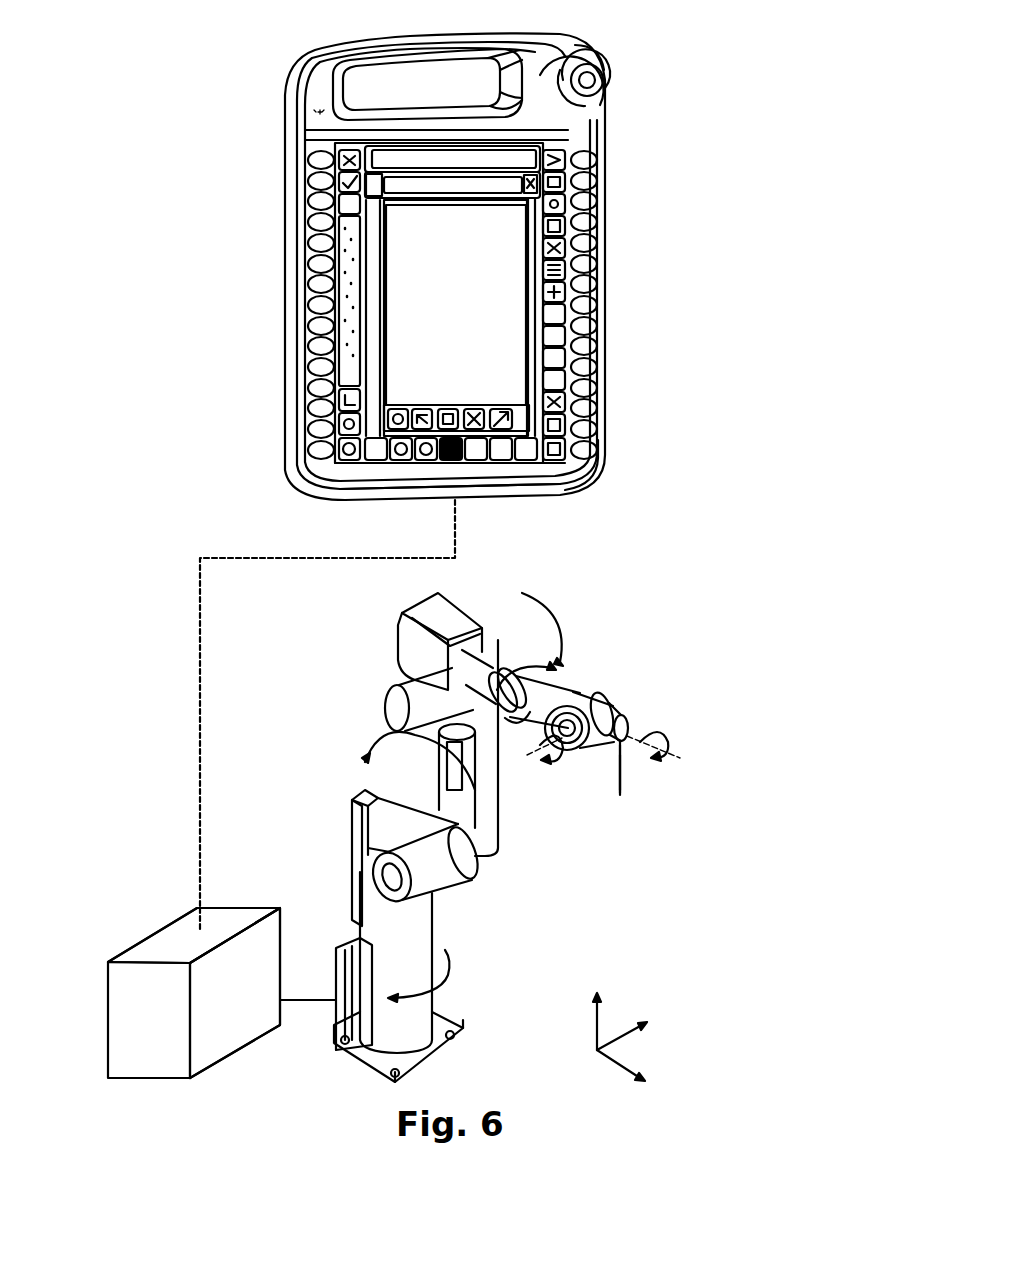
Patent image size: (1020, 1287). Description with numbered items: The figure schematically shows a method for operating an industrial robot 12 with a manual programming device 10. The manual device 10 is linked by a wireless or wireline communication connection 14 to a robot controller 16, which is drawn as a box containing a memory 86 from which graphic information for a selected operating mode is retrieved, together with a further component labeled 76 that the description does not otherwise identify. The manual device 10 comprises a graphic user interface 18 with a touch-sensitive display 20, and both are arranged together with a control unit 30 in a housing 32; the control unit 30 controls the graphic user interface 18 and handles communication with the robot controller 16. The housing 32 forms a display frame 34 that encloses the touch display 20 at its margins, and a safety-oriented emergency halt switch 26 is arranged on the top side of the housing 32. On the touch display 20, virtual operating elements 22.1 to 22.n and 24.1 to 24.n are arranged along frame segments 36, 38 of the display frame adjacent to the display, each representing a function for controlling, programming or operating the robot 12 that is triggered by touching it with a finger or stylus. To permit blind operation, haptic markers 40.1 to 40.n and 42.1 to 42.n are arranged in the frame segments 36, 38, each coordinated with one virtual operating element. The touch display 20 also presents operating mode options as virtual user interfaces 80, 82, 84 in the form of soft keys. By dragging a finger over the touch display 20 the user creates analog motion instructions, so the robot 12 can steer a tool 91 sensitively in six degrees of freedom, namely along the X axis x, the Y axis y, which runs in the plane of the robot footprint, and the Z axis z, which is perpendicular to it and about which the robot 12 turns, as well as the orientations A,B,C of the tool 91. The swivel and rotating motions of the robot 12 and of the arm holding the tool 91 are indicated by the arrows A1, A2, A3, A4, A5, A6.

The manual programming device 10 is at (342, 27).
The industrial robot 12 is at (316, 645).
The communication connection 14 is at (200, 668).
The robot controller 16 is at (156, 948).
The graphic user interface 18 is at (466, 243).
The touch-sensitive display 20 is at (466, 328).
The virtual operating element 22.1 is at (588, 158).
The virtual operating element 22.n is at (590, 448).
The virtual operating element 24.1 is at (316, 158).
The virtual operating element 24.n is at (318, 448).
The emergency halt switch 26 is at (611, 80).
The control unit 30 is at (481, 511).
The housing 32 is at (318, 89).
The display frame 34 is at (604, 492).
The frame segment 36 is at (545, 315).
The frame segment 38 is at (345, 320).
The haptic marker 40.1 is at (562, 160).
The haptic marker 40.n is at (566, 452).
The haptic marker 42.1 is at (338, 160).
The haptic marker 42.n is at (340, 454).
The controller top face 76 is at (232, 920).
The memory 86 is at (270, 945).
The virtual user interface 80 is at (385, 403).
The virtual user interface 82 is at (414, 403).
The virtual user interface 84 is at (446, 403).
The tool 91 is at (622, 785).
The orientations of the tool A,B,C is at (636, 776).
The arrow A1 is at (436, 976).
The arrow A2 is at (407, 754).
The arrow A3 is at (544, 628).
The arrow A4 is at (526, 686).
The arrow A5 is at (545, 766).
The arrow A6 is at (657, 732).
The X axis x is at (629, 1073).
The Y axis y is at (629, 1029).
The Z axis z is at (596, 1010).